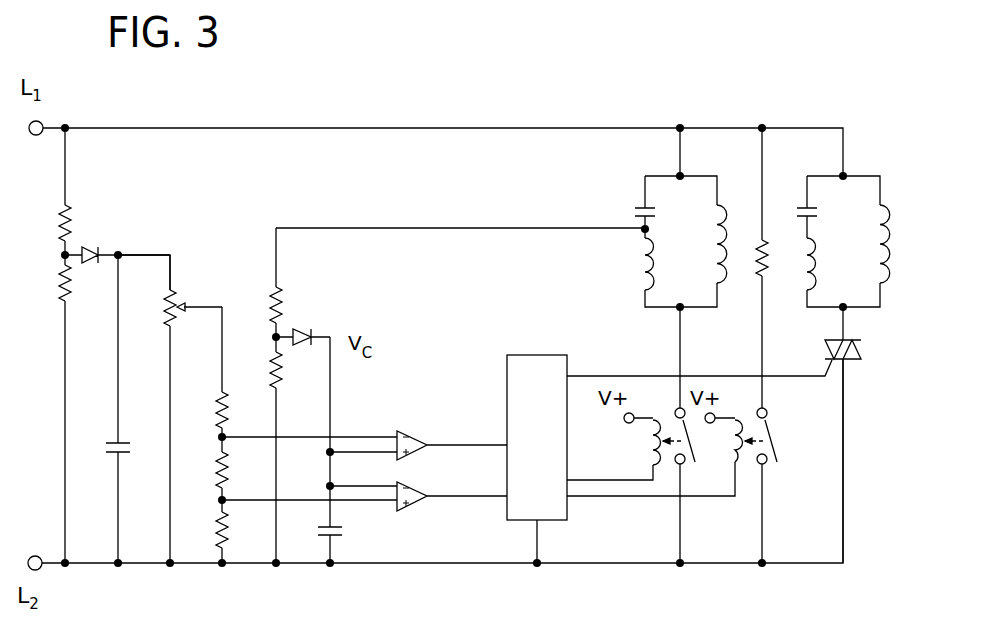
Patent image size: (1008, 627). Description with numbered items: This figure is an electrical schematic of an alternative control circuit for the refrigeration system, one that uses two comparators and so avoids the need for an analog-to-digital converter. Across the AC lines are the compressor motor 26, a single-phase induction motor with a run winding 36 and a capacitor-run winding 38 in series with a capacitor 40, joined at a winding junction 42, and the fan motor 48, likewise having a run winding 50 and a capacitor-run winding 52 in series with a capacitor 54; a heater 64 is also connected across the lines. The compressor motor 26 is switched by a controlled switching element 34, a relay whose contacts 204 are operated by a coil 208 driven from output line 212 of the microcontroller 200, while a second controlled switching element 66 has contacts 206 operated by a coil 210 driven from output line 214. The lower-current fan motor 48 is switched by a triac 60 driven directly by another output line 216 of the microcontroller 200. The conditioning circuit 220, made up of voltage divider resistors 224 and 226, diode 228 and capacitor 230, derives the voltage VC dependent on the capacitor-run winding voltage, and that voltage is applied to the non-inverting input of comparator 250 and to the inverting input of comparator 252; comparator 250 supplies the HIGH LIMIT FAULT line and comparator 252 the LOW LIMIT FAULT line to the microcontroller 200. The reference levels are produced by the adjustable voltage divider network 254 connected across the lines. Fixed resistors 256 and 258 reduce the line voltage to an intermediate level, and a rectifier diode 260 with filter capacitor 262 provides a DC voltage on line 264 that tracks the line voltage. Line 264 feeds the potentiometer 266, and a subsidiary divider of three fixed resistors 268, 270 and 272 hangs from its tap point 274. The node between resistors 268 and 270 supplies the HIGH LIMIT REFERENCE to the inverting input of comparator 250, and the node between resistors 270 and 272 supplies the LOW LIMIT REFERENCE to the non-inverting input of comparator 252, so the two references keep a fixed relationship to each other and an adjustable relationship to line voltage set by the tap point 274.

The compressor motor 26 is at (653, 217).
The controlled switching element 34 is at (660, 522).
The run winding 36 is at (720, 252).
The capacitor-run winding 38 is at (642, 290).
The capacitor 40 is at (638, 207).
The junction of first motor 42 is at (640, 228).
The fan motor 48 is at (838, 225).
The run winding 50 is at (880, 274).
The capacitor-run winding 52 is at (816, 262).
The capacitor 54 is at (800, 206).
The triac 60 is at (848, 361).
The heater 64 is at (760, 278).
The controlled switching element 66 is at (772, 510).
The microcontroller 200 is at (516, 522).
The contacts 204 is at (690, 428).
The contacts 206 is at (773, 458).
The coil 208 is at (639, 439).
The coil 210 is at (732, 458).
The output line 212 is at (612, 482).
The output line 214 is at (720, 497).
The output line 216 is at (788, 376).
The conditioning circuit 220 is at (307, 471).
The voltage divider resistor 224 is at (282, 290).
The voltage divider resistor 226 is at (282, 374).
The diode 228 is at (303, 331).
The capacitor 230 is at (338, 527).
The comparator 250 is at (406, 432).
The comparator 252 is at (422, 491).
The adjustable voltage divider network 254 is at (150, 222).
The fixed resistor 256 is at (68, 209).
The fixed resistor 258 is at (62, 302).
The rectifier diode 260 is at (86, 248).
The filter capacitor 262 is at (110, 443).
The line 264 is at (158, 254).
The potentiometer 266 is at (176, 292).
The fixed resistor 268 is at (229, 392).
The fixed resistor 270 is at (217, 470).
The fixed resistor 272 is at (229, 518).
The tap point 274 is at (184, 311).